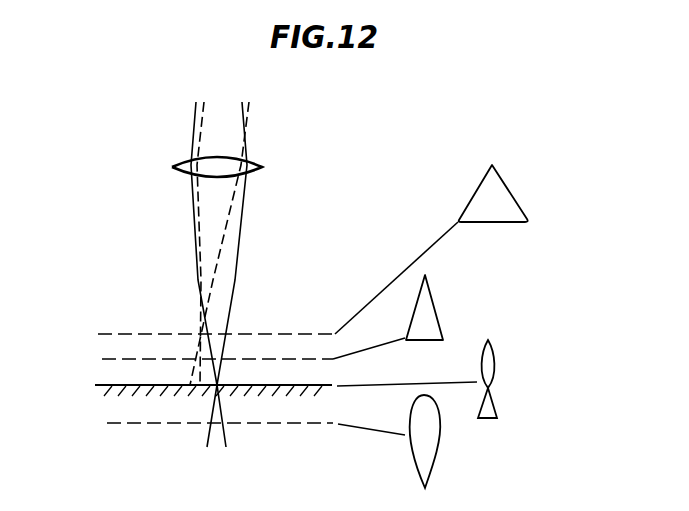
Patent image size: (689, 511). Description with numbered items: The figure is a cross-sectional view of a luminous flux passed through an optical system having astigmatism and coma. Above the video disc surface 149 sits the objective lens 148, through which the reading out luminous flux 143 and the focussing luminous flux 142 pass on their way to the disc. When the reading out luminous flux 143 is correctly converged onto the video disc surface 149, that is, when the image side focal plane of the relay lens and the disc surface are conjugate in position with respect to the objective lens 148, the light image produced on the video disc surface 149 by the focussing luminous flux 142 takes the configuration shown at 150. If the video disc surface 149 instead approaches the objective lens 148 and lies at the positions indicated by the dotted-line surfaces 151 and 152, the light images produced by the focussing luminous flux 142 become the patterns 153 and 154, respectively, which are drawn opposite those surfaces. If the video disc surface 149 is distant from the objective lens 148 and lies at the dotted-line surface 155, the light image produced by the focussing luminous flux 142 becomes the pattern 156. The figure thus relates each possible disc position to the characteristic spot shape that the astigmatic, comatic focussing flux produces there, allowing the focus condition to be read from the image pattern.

The focussing luminous flux 142 is at (235, 203).
The reading out luminous flux 143 is at (238, 252).
The objective lens 148 is at (258, 166).
The video disc surface 149 is at (100, 384).
The light image configuration 150 is at (493, 363).
The surface 151 is at (110, 359).
The surface 152 is at (107, 333).
The light image pattern 153 is at (438, 327).
The light image pattern 154 is at (528, 222).
The surface 155 is at (107, 423).
The light image pattern 156 is at (428, 460).